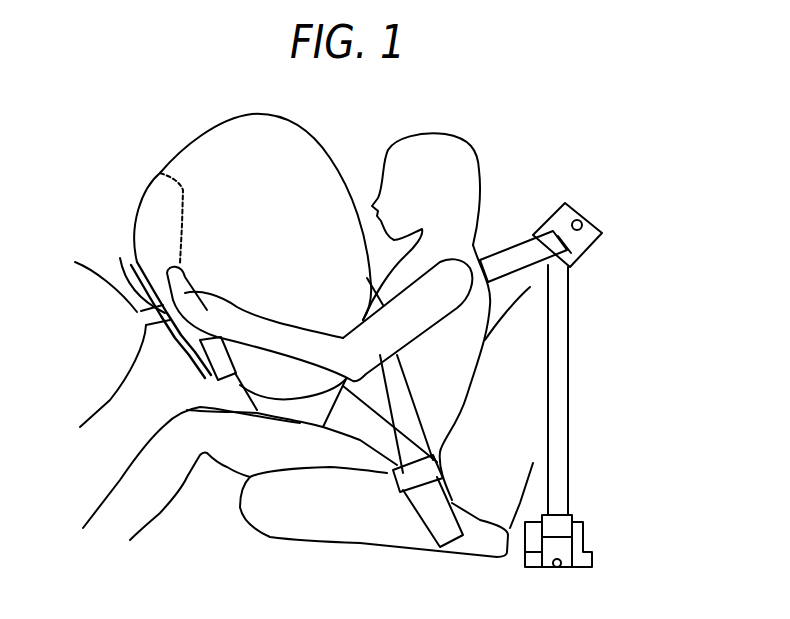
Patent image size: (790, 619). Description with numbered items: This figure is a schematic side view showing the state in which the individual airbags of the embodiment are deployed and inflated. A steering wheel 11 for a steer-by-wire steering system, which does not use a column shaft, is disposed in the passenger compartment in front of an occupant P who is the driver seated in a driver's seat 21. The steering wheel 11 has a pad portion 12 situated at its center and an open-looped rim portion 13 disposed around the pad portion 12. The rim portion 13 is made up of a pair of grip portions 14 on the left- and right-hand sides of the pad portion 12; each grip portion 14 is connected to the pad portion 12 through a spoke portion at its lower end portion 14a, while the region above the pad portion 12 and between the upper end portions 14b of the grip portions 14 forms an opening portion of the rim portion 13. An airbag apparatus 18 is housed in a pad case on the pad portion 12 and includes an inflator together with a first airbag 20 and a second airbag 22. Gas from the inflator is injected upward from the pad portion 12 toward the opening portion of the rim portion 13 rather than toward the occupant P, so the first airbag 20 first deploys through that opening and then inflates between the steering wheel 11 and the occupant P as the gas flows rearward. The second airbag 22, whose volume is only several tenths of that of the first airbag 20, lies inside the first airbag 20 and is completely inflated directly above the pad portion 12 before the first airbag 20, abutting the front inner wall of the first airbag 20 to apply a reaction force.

The steering wheel 11 is at (159, 349).
The pad portion 12 is at (137, 270).
The rim portion 13 is at (206, 398).
The grip portion 14 is at (228, 317).
The lower end portion 14a is at (228, 363).
The upper end portion 14b is at (172, 272).
The airbag apparatus 18 is at (217, 257).
The first airbag 20 is at (252, 261).
The driver's seat 21 is at (360, 543).
The second airbag 22 is at (183, 189).
The occupant P is at (470, 172).